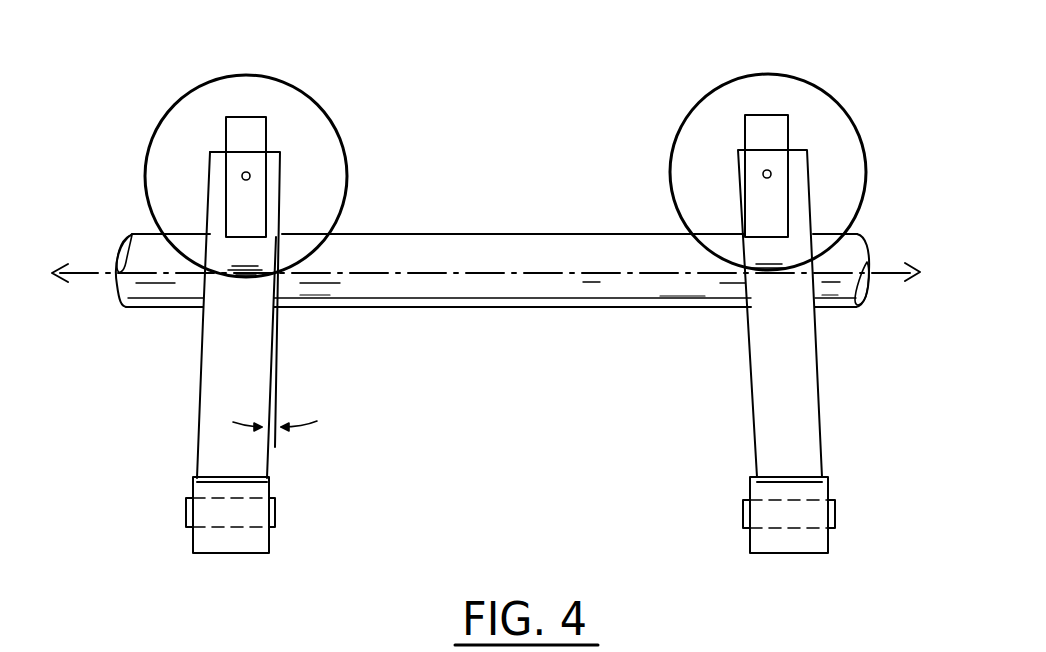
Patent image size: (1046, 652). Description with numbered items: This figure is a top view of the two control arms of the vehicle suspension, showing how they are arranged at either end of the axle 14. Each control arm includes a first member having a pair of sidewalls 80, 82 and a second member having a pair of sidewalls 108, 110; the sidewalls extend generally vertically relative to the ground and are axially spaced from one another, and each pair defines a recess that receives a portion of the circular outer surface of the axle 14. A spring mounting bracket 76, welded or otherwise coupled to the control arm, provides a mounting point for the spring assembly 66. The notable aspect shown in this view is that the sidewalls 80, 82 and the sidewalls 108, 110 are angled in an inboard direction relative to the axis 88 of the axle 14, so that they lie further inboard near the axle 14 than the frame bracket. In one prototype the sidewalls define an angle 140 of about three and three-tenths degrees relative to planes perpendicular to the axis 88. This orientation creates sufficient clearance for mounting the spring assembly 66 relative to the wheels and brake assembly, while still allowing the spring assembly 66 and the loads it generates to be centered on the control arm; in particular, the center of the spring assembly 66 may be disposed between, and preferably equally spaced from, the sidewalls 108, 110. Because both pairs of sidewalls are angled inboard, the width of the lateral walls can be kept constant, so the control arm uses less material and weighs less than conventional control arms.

The axle 14 is at (500, 305).
The spring assembly 66 is at (350, 178).
The spring mounting bracket 76 is at (256, 140).
The sidewall 80 is at (200, 368).
The sidewall 82 is at (267, 468).
The axis 88 is at (74, 287).
The sidewall 108 is at (205, 183).
The sidewall 110 is at (283, 173).
The angle 140 is at (276, 447).